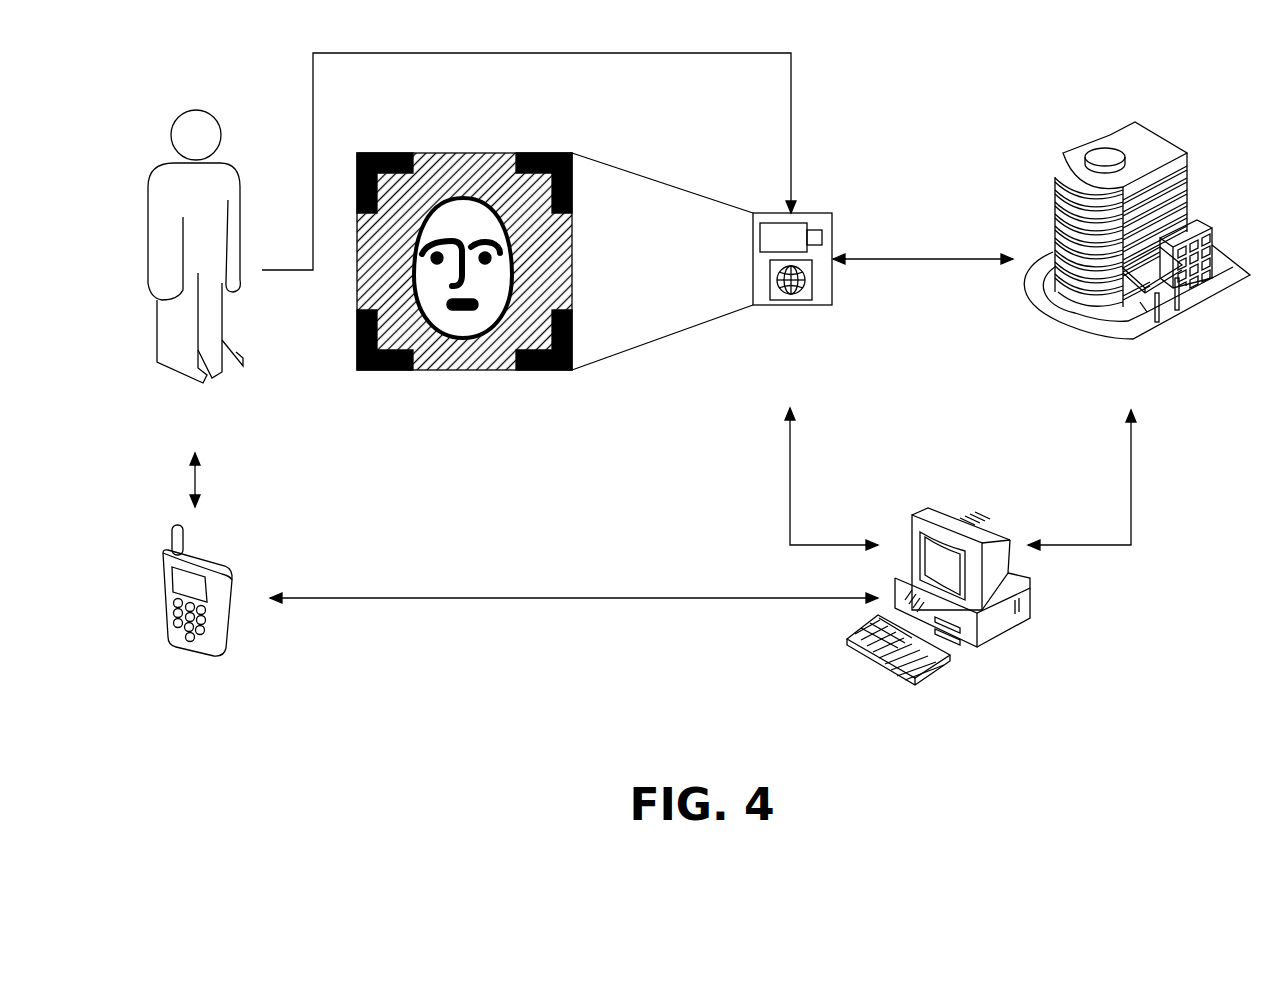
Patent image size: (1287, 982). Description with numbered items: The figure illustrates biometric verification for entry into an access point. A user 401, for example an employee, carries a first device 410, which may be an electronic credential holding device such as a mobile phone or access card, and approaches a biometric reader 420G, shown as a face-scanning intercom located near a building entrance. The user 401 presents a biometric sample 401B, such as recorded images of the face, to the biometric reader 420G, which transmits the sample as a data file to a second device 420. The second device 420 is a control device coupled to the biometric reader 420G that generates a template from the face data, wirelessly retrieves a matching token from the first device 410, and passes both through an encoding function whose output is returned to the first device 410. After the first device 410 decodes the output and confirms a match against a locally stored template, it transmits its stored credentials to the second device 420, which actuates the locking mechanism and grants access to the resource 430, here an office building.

The user 401 is at (181, 437).
The biometric sample 401B is at (442, 449).
The biometric reader 420G is at (776, 387).
The resource 430 is at (1115, 395).
The first device 410 is at (182, 743).
The second device 420 is at (942, 760).